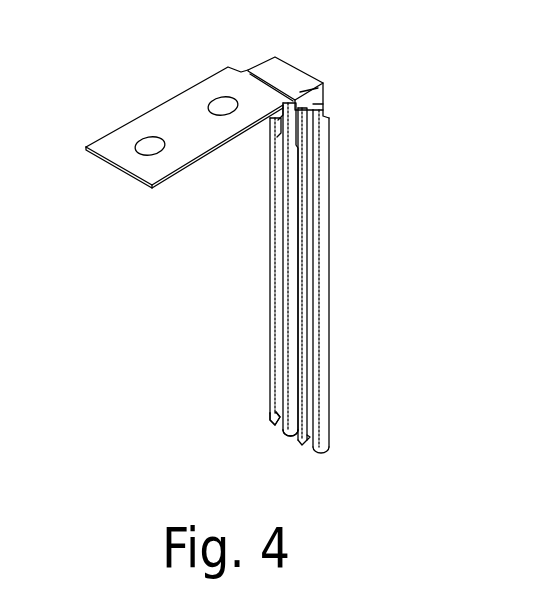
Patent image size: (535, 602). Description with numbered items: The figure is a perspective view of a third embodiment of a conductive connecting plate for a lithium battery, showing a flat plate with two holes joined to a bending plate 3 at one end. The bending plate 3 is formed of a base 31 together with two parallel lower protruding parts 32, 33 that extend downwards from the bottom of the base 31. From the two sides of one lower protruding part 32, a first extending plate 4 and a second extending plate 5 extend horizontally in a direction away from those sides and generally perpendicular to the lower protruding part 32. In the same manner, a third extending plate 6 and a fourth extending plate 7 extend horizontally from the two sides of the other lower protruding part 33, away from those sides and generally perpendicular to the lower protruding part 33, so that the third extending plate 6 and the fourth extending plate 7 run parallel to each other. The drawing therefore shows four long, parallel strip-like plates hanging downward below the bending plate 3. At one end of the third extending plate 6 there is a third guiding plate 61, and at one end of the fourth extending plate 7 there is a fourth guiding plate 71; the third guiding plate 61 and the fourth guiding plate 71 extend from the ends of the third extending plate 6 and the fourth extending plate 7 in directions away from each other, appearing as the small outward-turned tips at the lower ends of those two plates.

The bending plate 3 is at (325, 77).
The base 31 is at (312, 95).
The lower protruding part 32 is at (320, 108).
The lower protruding part 33 is at (283, 117).
The first extending plate 4 is at (323, 277).
The second extending plate 5 is at (308, 325).
The third extending plate 6 is at (275, 277).
The fourth extending plate 7 is at (292, 325).
The third guiding plate 61 is at (278, 424).
The fourth guiding plate 71 is at (290, 436).